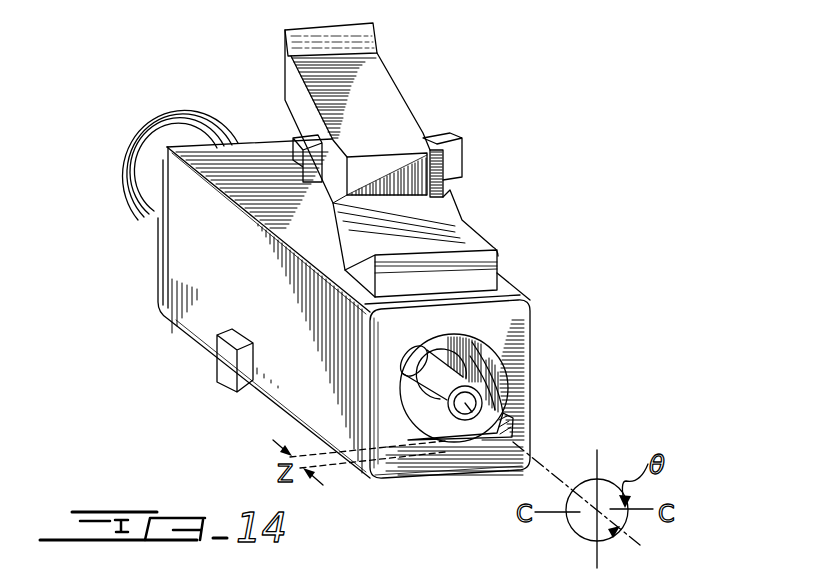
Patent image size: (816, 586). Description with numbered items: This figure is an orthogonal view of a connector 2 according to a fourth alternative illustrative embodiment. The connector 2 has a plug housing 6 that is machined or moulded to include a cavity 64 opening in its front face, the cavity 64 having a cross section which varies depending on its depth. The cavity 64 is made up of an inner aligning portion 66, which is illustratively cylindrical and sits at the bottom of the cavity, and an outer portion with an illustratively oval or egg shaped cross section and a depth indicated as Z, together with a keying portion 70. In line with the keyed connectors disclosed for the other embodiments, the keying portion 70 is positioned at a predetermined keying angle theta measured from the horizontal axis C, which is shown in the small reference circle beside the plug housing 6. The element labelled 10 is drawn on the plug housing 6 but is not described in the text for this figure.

The optical sensor device 2 is at (166, 349).
The housing 6 is at (309, 372).
The housing body 10 is at (378, 338).
The aperture 64 is at (472, 360).
The light emitter 66 is at (484, 378).
The tab 70 is at (512, 414).